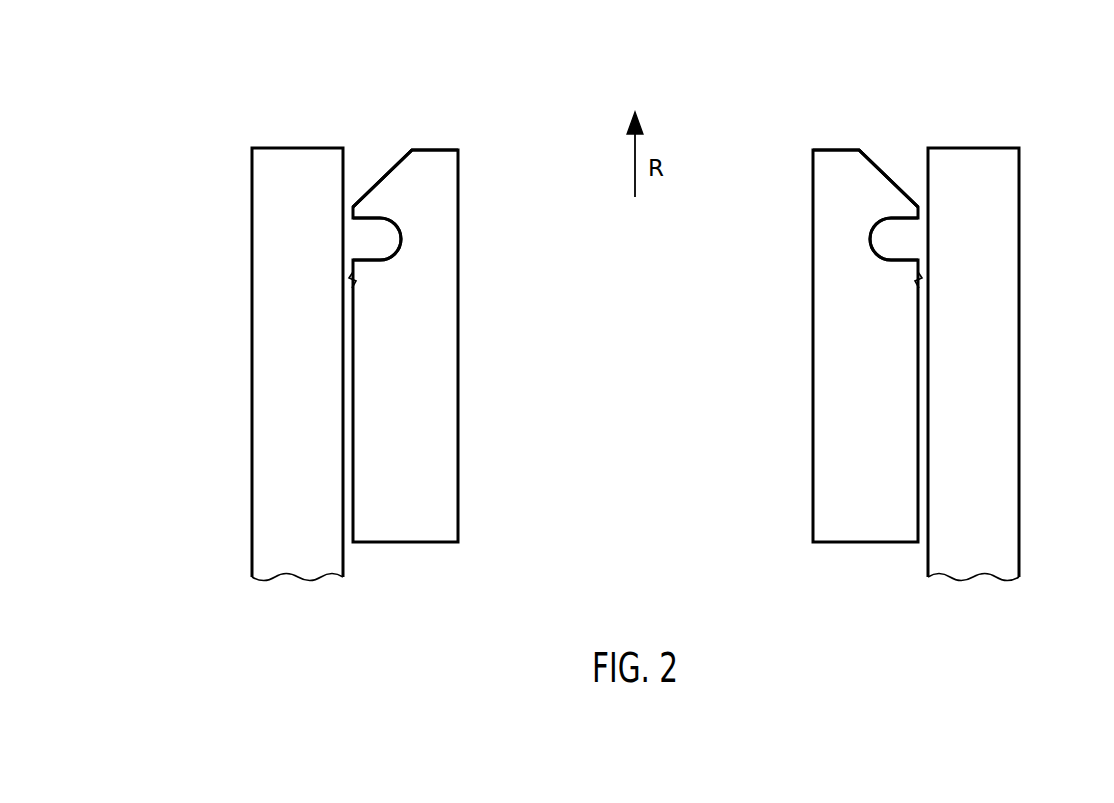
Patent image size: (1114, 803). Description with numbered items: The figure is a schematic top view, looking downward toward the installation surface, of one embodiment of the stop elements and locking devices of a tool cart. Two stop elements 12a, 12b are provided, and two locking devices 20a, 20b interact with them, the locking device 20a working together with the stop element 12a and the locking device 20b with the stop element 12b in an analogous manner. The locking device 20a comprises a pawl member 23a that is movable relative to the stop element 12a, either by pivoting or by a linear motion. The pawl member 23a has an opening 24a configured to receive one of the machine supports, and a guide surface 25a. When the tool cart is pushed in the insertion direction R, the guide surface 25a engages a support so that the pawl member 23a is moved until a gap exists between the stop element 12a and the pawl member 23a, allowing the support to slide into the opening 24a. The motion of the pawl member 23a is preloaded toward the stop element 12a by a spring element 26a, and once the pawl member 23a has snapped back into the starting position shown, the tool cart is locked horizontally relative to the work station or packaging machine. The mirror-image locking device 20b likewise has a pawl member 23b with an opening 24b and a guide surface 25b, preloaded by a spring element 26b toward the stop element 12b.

The stop element 12a is at (270, 263).
The stop element 12b is at (1002, 364).
The locking device 20a is at (386, 167).
The locking device 20b is at (865, 145).
The pawl member 23a is at (438, 385).
The pawl member 23b is at (835, 346).
The opening 24a is at (380, 237).
The opening 24b is at (835, 236).
The guide surface 25a is at (380, 181).
The guide surface 25b is at (898, 145).
The spring element 26a is at (350, 282).
The spring element 26b is at (997, 301).